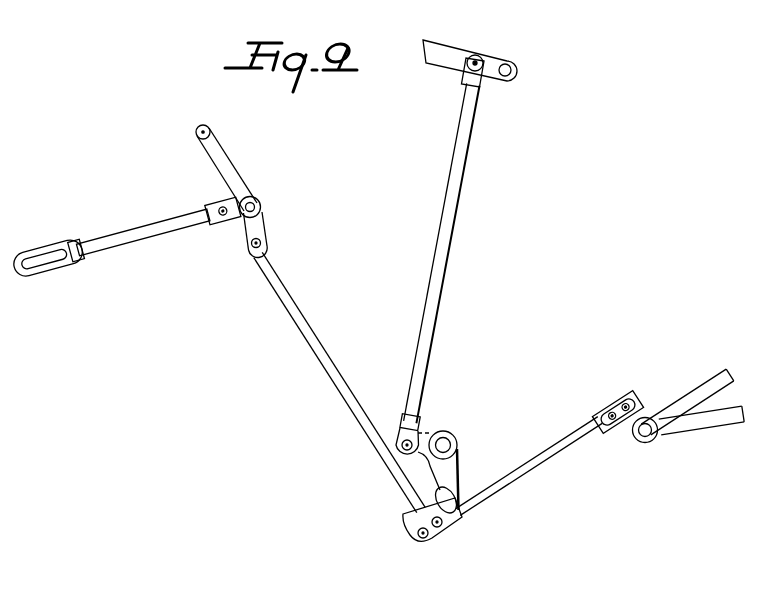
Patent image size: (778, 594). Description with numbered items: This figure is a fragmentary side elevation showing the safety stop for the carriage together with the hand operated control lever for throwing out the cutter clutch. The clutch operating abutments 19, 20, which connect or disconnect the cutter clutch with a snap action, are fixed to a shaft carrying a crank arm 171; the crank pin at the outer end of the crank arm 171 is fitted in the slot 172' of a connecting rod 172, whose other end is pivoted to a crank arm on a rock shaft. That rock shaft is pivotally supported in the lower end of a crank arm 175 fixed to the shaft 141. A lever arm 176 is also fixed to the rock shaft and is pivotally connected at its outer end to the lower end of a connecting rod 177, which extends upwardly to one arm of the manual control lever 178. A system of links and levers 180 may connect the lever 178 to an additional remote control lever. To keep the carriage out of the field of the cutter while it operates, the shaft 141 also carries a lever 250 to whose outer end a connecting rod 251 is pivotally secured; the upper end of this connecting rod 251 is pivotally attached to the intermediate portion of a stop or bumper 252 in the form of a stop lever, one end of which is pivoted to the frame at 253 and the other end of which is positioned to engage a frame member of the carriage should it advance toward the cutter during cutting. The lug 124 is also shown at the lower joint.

The clutch operating abutment 19 is at (723, 415).
The clutch operating abutment 20 is at (715, 386).
The lug 124 is at (446, 498).
The shaft 141 is at (448, 447).
The crank arm 171 is at (621, 428).
The connecting rod 172 is at (530, 466).
The slot 172' is at (618, 396).
The crank arm 175 is at (452, 472).
The lever arm 176 is at (420, 500).
The connecting rod 177 is at (355, 430).
The manual control lever 178 is at (231, 170).
The system of links and levers 180 is at (182, 197).
The lever 250 is at (434, 427).
The connecting rod 251 is at (433, 337).
The stop or bumper 252 is at (447, 57).
The pivot 253 is at (513, 67).